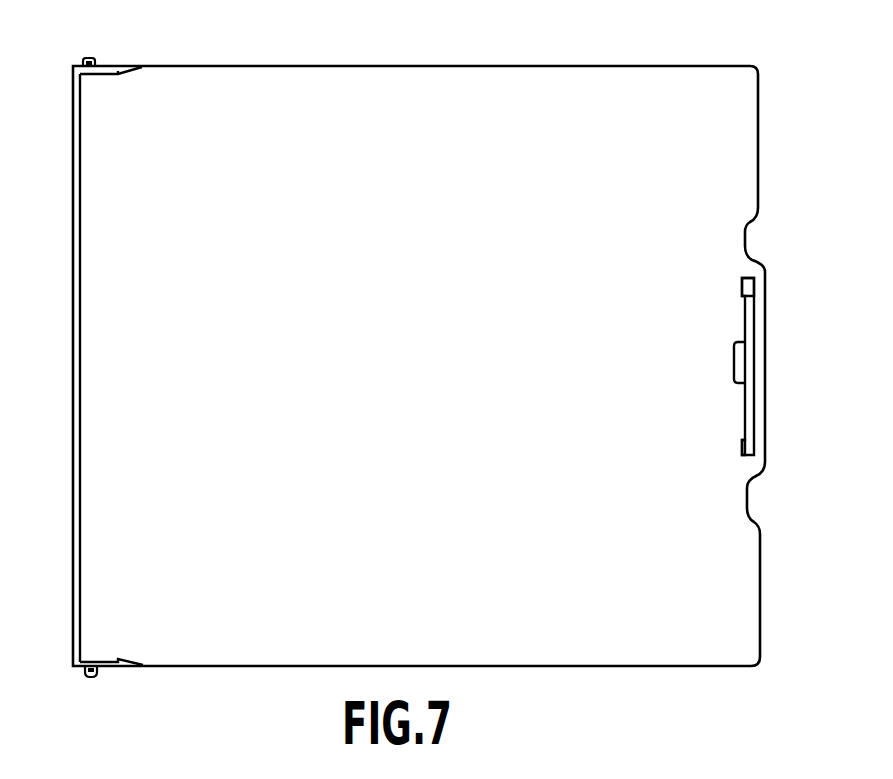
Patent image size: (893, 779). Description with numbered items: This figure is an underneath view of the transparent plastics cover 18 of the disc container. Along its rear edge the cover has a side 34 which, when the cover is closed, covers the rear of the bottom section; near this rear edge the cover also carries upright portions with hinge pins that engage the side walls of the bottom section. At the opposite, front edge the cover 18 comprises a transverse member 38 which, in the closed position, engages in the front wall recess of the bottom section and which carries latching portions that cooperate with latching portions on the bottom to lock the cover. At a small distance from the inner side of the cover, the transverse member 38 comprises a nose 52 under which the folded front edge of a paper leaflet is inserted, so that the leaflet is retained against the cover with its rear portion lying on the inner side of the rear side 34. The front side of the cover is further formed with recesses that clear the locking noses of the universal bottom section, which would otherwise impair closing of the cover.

The cover 18 is at (607, 80).
The side 34 is at (83, 285).
The transverse member 38 is at (750, 337).
The nose 52 is at (735, 362).